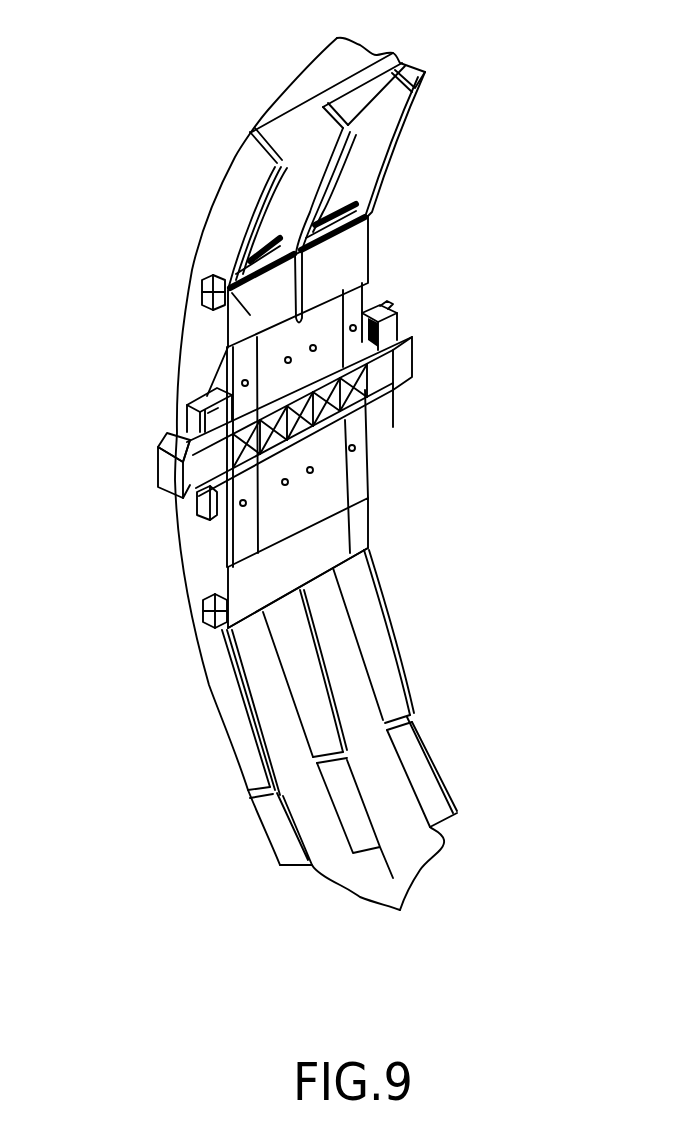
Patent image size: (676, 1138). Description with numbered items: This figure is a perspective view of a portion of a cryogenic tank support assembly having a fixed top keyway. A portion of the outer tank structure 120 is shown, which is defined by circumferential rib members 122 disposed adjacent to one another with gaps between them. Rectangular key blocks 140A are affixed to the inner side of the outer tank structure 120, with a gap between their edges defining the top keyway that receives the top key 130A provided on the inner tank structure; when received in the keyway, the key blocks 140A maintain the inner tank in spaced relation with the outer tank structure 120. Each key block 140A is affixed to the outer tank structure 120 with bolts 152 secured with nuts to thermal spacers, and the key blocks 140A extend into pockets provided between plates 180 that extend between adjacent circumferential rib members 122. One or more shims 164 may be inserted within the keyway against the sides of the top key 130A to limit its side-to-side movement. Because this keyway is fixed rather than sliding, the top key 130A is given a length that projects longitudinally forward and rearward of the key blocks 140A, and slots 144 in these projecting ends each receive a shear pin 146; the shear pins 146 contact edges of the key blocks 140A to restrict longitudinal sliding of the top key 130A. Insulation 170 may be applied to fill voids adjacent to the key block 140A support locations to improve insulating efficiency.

The outer tank structure 120 is at (180, 110).
The circumferential rib member 122 is at (378, 885).
The top key 130A is at (173, 477).
The key block 140A is at (228, 348).
The slot 144 is at (203, 521).
The shear pin 146 is at (187, 412).
The bolt 152 is at (285, 360).
The shim 164 is at (397, 407).
The insulation 170 is at (328, 598).
The plate 180 is at (202, 281).